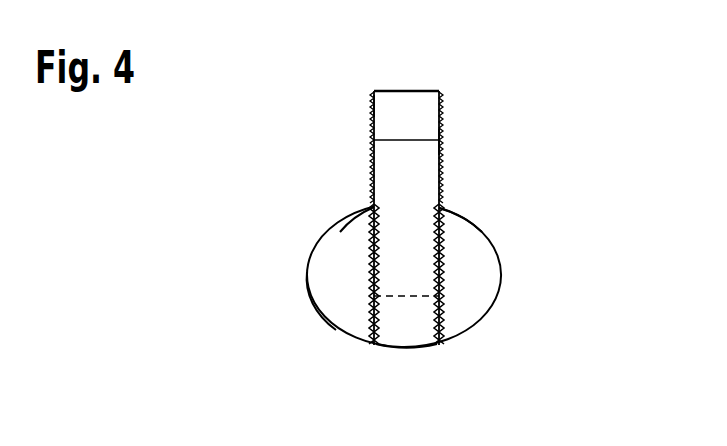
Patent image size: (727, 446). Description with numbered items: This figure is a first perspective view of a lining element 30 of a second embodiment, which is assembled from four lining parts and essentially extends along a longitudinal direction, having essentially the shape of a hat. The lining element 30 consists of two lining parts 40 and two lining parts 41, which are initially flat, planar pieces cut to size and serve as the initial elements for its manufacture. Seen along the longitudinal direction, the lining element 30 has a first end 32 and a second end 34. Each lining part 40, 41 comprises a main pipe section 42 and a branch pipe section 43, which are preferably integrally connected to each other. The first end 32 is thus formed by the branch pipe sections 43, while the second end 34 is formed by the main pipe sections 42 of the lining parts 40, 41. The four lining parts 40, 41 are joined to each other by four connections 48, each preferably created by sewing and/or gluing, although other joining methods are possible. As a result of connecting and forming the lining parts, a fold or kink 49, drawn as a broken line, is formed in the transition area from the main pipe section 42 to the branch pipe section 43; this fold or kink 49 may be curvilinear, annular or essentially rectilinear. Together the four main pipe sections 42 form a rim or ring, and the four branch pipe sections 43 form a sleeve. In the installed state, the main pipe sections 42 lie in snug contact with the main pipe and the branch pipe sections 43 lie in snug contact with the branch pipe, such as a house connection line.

The lining element 30 is at (578, 175).
The first end 32 is at (447, 100).
The second end 34 is at (530, 258).
The lining part 40 is at (304, 272).
The lining part 41 is at (425, 350).
The main pipe section 42 is at (342, 240).
The branch pipe section 43 is at (392, 93).
The connection 48 is at (426, 121).
The fold or kink 49 is at (403, 296).